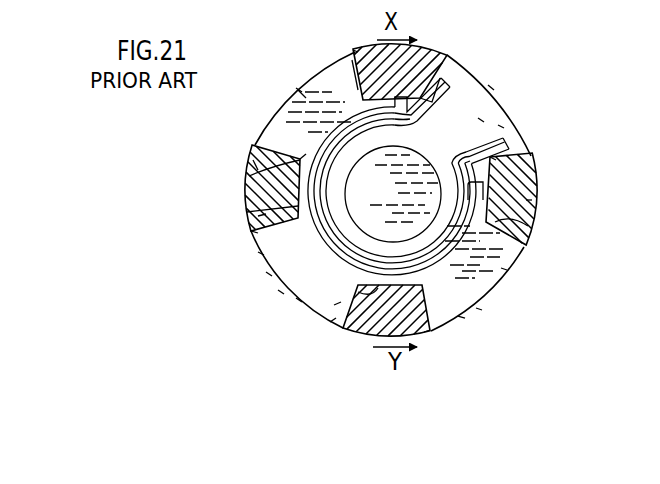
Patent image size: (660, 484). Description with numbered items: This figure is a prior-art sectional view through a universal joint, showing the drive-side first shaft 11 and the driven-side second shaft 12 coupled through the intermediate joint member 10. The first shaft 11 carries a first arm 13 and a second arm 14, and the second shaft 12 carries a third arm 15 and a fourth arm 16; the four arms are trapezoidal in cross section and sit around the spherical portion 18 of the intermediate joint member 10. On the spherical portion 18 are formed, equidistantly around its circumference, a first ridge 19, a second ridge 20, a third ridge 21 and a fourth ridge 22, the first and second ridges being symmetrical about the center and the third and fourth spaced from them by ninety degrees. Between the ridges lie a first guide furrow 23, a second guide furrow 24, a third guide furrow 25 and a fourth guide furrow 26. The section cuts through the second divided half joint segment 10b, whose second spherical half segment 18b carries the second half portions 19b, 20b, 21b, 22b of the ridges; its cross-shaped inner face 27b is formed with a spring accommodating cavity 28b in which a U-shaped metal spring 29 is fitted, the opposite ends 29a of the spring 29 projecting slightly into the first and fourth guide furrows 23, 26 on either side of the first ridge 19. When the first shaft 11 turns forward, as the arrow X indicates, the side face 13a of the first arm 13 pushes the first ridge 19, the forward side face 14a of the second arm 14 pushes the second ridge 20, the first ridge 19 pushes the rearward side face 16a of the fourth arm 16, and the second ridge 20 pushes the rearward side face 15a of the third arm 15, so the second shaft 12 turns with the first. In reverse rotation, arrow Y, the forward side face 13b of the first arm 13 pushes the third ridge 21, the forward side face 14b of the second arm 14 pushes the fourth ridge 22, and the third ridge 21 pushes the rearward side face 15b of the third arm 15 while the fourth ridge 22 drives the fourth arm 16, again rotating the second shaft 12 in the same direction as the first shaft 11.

The intermediate joint member 10 is at (490, 294).
The second divided half joint segment 10b is at (260, 253).
The first shaft 11 is at (443, 46).
The second shaft 12 is at (544, 184).
The first arm 13 is at (431, 47).
The side face of the first arm 13a is at (445, 72).
The forward side face of the first arm 13b is at (346, 80).
The second arm 14 is at (367, 330).
The forward side face of the second arm 14a is at (341, 302).
The forward side face of the second arm 14b is at (462, 318).
The third arm 15 is at (248, 190).
The rearward side face of the third arm 15a is at (262, 232).
The rearward side face of the third arm 15b is at (306, 155).
The fourth arm 16 is at (530, 200).
The rearward side face of the fourth arm 16a is at (500, 162).
The spherical portion 18 is at (265, 212).
The second spherical half segment 18b is at (334, 322).
The first ridge 19 is at (490, 88).
The second half portion of the first ridge 19b is at (480, 118).
The second ridge 20 is at (279, 290).
The second half portion of the second ridge 20b is at (268, 272).
The third ridge 21 is at (300, 94).
The second half portion of the third ridge 21b is at (300, 90).
The fourth ridge 22 is at (478, 308).
The second half portion of the fourth ridge 22b is at (503, 268).
The first guide furrow 23 is at (355, 48).
The second guide furrow 24 is at (427, 332).
The third guide furrow 25 is at (258, 168).
The fourth guide furrow 26 is at (512, 230).
The cross-shaped inner face 27b is at (298, 298).
The spring accommodating cavity 28b is at (500, 125).
The U-shaped metal spring 29 is at (330, 147).
The opposite ends of the spring 29a is at (455, 82).